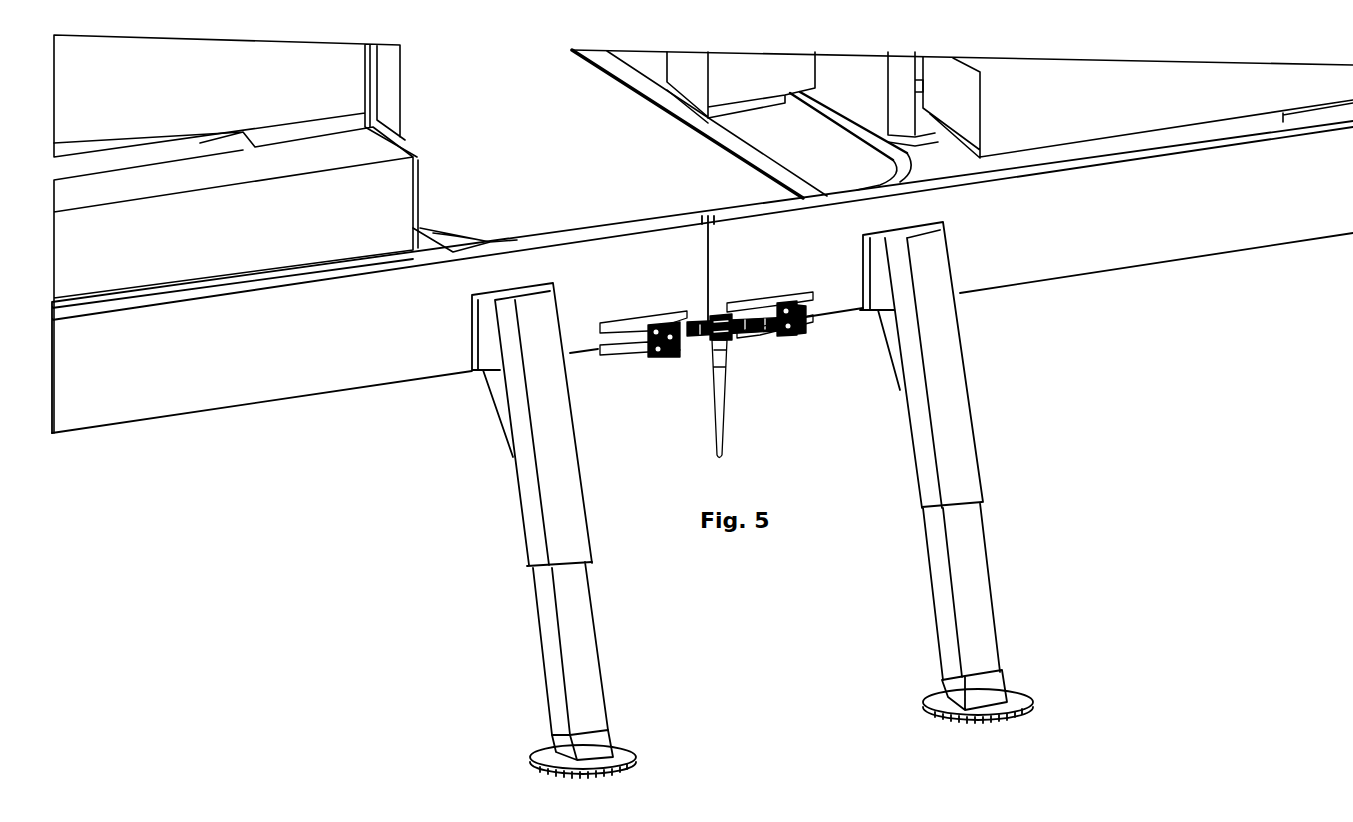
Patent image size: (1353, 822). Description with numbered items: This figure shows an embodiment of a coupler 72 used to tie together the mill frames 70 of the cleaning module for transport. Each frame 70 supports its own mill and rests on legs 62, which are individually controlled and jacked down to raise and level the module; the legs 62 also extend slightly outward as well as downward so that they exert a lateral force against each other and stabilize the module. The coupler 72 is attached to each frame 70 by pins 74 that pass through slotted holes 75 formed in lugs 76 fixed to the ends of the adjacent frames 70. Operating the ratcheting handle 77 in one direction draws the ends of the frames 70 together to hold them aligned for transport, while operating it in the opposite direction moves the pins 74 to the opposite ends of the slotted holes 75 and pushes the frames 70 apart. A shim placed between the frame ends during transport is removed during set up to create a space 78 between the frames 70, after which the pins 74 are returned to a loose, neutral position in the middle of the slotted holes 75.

The legs 62 is at (990, 572).
The frame 70 is at (642, 222).
The coupler 72 is at (697, 343).
The pins 74 is at (787, 305).
The slotted holes 75 is at (783, 308).
The lugs 76 is at (803, 328).
The ratcheting handle 77 is at (728, 413).
The space 78 is at (692, 215).